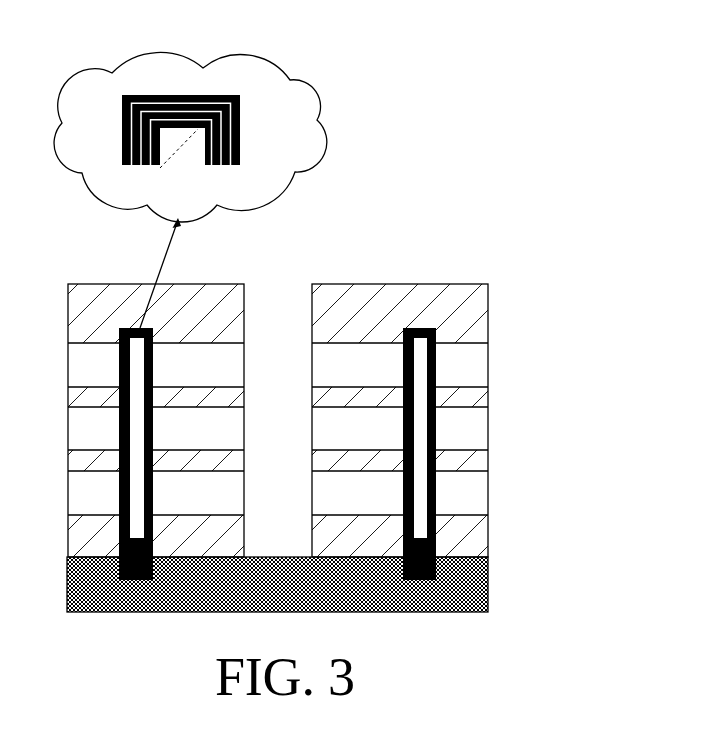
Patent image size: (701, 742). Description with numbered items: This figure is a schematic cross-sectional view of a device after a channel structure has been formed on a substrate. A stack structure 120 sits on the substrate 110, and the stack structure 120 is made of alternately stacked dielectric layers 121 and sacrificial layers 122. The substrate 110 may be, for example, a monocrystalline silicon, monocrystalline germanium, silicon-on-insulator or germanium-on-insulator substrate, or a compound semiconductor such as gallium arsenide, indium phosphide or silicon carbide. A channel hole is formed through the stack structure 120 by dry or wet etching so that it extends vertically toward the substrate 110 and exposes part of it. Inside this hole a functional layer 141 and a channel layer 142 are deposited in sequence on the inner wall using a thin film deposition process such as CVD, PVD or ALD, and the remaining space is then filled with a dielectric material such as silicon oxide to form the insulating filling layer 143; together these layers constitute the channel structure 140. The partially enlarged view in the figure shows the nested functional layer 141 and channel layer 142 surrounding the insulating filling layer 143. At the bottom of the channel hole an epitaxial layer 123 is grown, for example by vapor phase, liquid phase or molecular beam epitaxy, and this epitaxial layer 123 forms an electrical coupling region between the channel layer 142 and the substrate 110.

The substrate 110 is at (472, 585).
The stack structure 120 is at (64, 344).
The dielectric layers 121 is at (473, 402).
The sacrificial layers 122 is at (473, 432).
The epitaxial layer 123 is at (440, 546).
The channel structure 140 is at (420, 328).
The functional layer 141 is at (158, 166).
The channel layer 142 is at (241, 132).
The insulating filling layer 143 is at (183, 155).